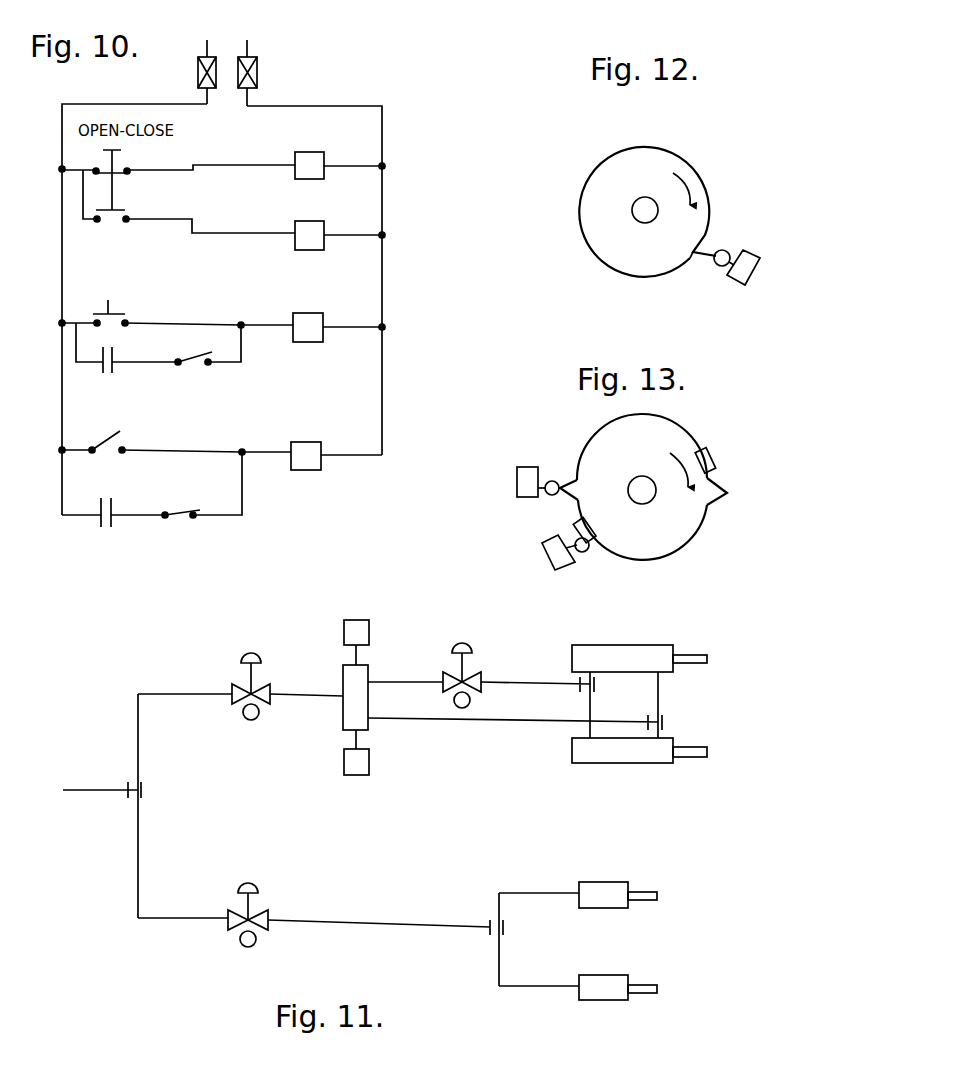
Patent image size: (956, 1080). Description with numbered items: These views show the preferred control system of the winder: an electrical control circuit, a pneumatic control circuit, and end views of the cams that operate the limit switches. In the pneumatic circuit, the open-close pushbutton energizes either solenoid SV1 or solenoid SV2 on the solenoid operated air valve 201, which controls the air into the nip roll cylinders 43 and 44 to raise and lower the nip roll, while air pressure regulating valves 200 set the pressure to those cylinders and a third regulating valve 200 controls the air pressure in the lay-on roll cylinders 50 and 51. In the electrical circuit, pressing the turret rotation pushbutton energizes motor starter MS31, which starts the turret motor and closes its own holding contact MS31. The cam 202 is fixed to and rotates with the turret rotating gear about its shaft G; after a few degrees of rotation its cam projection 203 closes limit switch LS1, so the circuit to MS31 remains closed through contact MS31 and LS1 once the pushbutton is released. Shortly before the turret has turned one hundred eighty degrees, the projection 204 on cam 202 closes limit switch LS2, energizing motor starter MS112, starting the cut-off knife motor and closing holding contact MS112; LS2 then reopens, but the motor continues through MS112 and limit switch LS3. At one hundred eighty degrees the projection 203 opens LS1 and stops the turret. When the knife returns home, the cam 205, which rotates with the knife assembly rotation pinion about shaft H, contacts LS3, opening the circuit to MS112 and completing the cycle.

In FIG. 11, the air pressure regulating valve 200 is at (232, 690).
In FIG. 11, the solenoid operated air valve 201 is at (343, 722).
In FIG. 11, the nip roll cylinder 43 is at (627, 645).
In FIG. 11, the nip roll cylinder 44 is at (634, 764).
In FIG. 11, the lay-on roll cylinder 50 is at (592, 882).
In FIG. 11, the lay-on roll cylinder 51 is at (612, 1000).
In FIG. 12, the cam 205 is at (696, 178).
In FIG. 13, the cam 202 is at (602, 440).
In FIG. 13, the cam projection 203 is at (572, 478).
In FIG. 13, the cam projection 204 is at (716, 457).
In FIG. 12, the shaft H is at (650, 197).
In FIG. 13, the shaft G is at (646, 476).
In FIG. 10, the limit switch LS1 is at (196, 360).
In FIG. 13, the limit switch LS1 is at (517, 482).
In FIG. 10, the limit switch LS2 is at (110, 433).
In FIG. 13, the limit switch LS2 is at (575, 565).
In FIG. 10, the limit switch LS3 is at (186, 518).
In FIG. 12, the limit switch LS3 is at (757, 271).
In FIG. 10, the solenoid SV1 is at (322, 142).
In FIG. 11, the solenoid SV1 is at (344, 766).
In FIG. 10, the solenoid SV2 is at (326, 208).
In FIG. 11, the solenoid SV2 is at (356, 620).
In FIG. 10, the motor starter MS31 is at (333, 300).
In FIG. 10, the motor starter MS112 is at (318, 428).